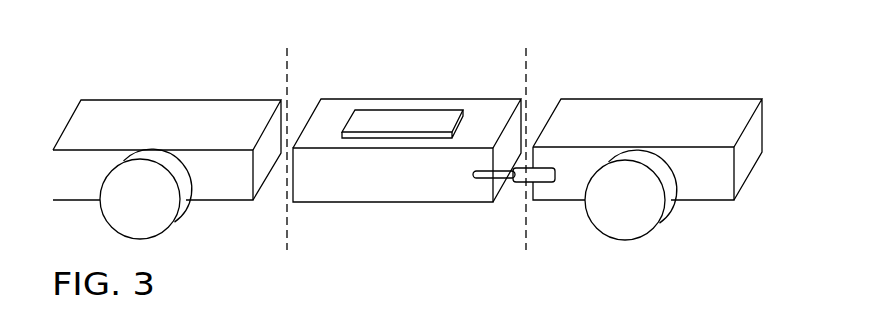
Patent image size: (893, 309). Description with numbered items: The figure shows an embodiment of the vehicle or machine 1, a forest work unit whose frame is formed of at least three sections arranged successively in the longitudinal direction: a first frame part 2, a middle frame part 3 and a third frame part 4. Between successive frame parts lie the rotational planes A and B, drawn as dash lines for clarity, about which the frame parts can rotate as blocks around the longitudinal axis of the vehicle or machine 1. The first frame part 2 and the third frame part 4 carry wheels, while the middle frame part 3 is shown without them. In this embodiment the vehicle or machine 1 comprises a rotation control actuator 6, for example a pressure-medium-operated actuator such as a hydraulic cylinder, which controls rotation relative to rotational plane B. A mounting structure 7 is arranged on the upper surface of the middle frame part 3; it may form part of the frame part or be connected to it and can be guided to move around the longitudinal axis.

The vehicle or machine 1 is at (112, 80).
The first frame part 2 is at (145, 116).
The frame part 3 is at (420, 107).
The third frame part 4 is at (646, 113).
The rotation control actuator 6 is at (524, 181).
The mounting structure 7 is at (368, 118).